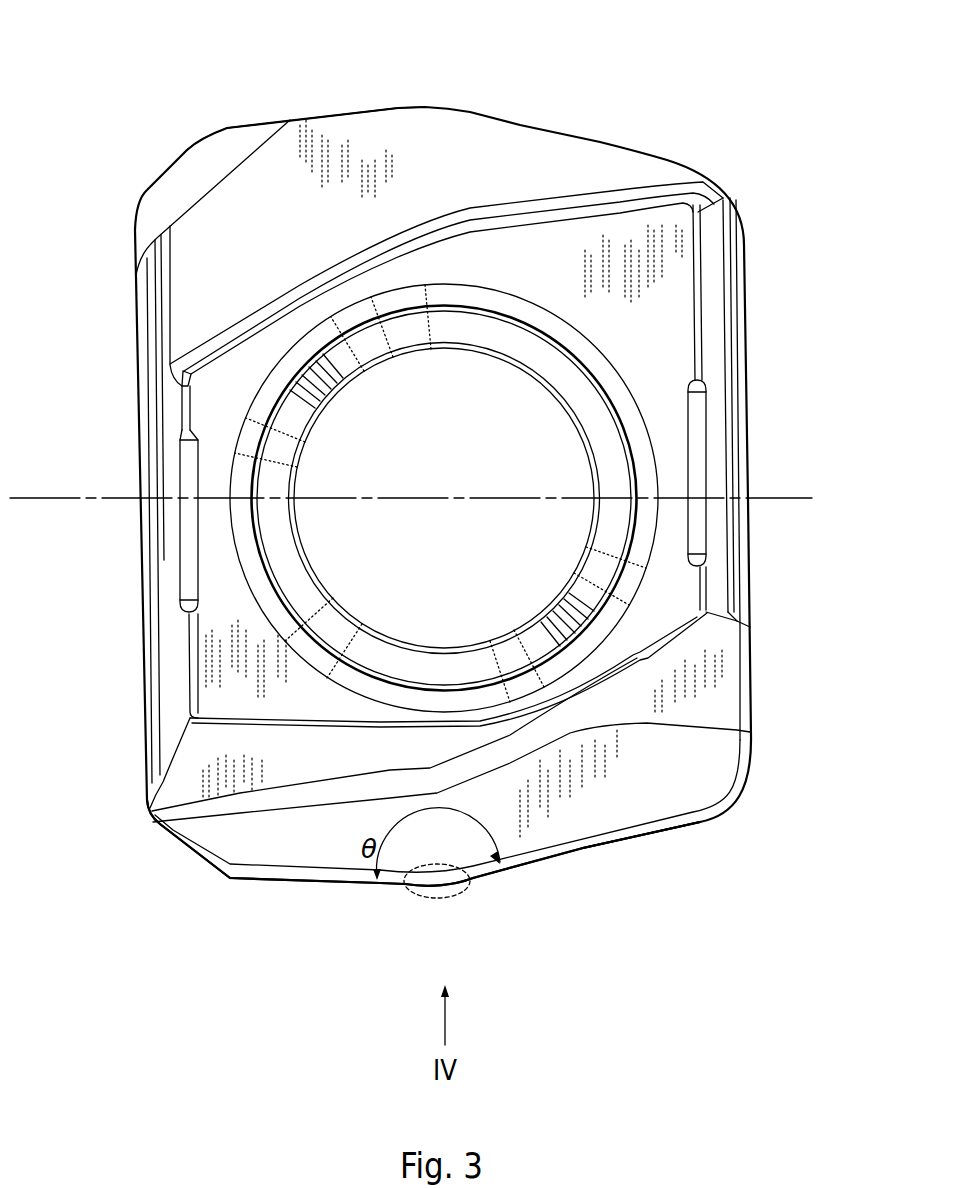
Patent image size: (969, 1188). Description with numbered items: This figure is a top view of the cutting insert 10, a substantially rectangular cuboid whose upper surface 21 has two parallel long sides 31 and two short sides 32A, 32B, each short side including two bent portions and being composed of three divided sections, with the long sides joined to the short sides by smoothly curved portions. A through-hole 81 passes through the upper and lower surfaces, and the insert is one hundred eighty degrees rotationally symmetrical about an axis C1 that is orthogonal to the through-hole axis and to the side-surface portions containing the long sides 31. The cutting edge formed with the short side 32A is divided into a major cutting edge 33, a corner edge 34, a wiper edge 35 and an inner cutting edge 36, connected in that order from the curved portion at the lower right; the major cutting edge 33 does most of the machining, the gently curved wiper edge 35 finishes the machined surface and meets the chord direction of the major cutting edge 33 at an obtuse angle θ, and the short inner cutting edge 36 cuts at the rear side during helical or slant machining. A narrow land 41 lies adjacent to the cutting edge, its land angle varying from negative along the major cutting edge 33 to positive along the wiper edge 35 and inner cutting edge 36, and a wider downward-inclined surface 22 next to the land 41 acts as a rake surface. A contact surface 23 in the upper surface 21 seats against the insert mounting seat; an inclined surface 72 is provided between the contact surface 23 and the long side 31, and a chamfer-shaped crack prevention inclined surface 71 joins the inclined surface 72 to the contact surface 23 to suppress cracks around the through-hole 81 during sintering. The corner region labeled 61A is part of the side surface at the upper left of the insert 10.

The cutting insert 10 is at (678, 85).
The upper surface 21 is at (675, 293).
The downward-inclined surface 22 is at (652, 777).
The contact surface 23 is at (670, 593).
The long sides 31 is at (136, 412).
The short side 32A is at (619, 878).
The short side 32B is at (432, 97).
The major cutting edge 33 is at (523, 867).
The corner edge 34 is at (418, 888).
The wiper edge 35 is at (267, 880).
The inner cutting edge 36 is at (185, 840).
The land 41 is at (693, 818).
The corner face 61A is at (183, 173).
The crack prevention inclined surface 71 is at (697, 466).
The inclined surface 72 is at (718, 300).
The through-hole 81 is at (650, 540).
The axis C1 is at (437, 497).